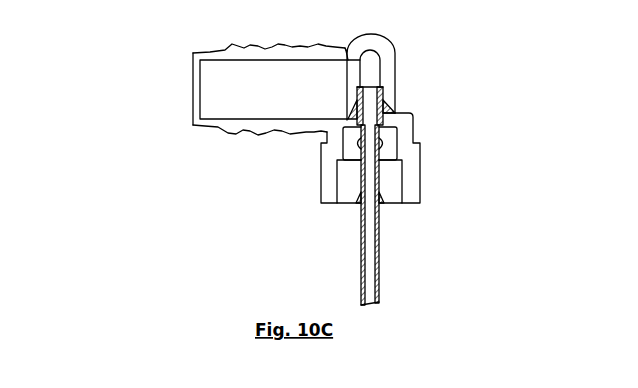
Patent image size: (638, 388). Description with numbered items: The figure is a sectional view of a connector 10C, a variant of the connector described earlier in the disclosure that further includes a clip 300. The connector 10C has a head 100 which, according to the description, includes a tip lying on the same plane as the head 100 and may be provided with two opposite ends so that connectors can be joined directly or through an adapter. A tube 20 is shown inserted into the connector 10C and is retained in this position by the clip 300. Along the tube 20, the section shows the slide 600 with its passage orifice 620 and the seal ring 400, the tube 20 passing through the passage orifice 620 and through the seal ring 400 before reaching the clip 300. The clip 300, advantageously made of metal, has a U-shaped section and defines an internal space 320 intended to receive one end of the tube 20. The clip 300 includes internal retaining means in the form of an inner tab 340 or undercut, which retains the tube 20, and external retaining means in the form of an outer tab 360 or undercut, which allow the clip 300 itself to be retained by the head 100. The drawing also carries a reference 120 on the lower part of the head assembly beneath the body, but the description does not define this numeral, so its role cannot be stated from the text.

The connector 10C is at (156, 132).
The head 100 is at (414, 59).
The clip 300 is at (395, 78).
The internal space 320 is at (350, 53).
The inner tab 340 is at (396, 90).
The outer tab 360 is at (390, 120).
The seal ring 400 is at (400, 150).
The slide 600 is at (398, 195).
The passage orifice 620 is at (360, 203).
The housing 120 is at (321, 180).
The tube 20 is at (380, 287).